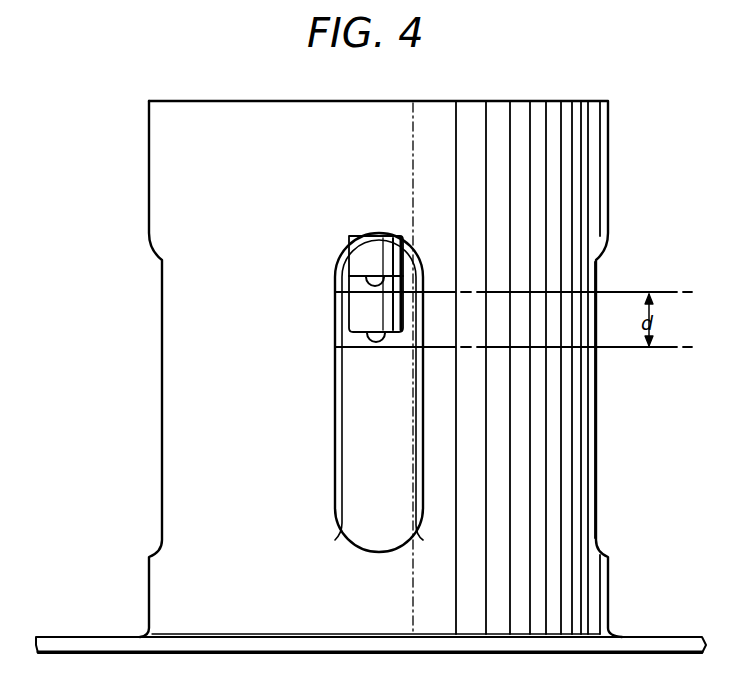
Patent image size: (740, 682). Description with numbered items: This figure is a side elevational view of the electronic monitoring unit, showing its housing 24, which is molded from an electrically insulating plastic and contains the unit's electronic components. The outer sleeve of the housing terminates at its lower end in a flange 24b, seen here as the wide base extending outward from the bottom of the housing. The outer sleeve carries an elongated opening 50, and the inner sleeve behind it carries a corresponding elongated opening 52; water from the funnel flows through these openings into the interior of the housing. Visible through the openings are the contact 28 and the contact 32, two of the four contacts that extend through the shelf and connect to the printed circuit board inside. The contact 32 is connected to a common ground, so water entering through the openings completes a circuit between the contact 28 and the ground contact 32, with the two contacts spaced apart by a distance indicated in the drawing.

The housing 24 is at (612, 213).
The flange 24b is at (70, 637).
The contact 28 is at (366, 290).
The contact 32 is at (368, 345).
The elongated opening 50 is at (335, 406).
The elongated opening 52 is at (342, 448).